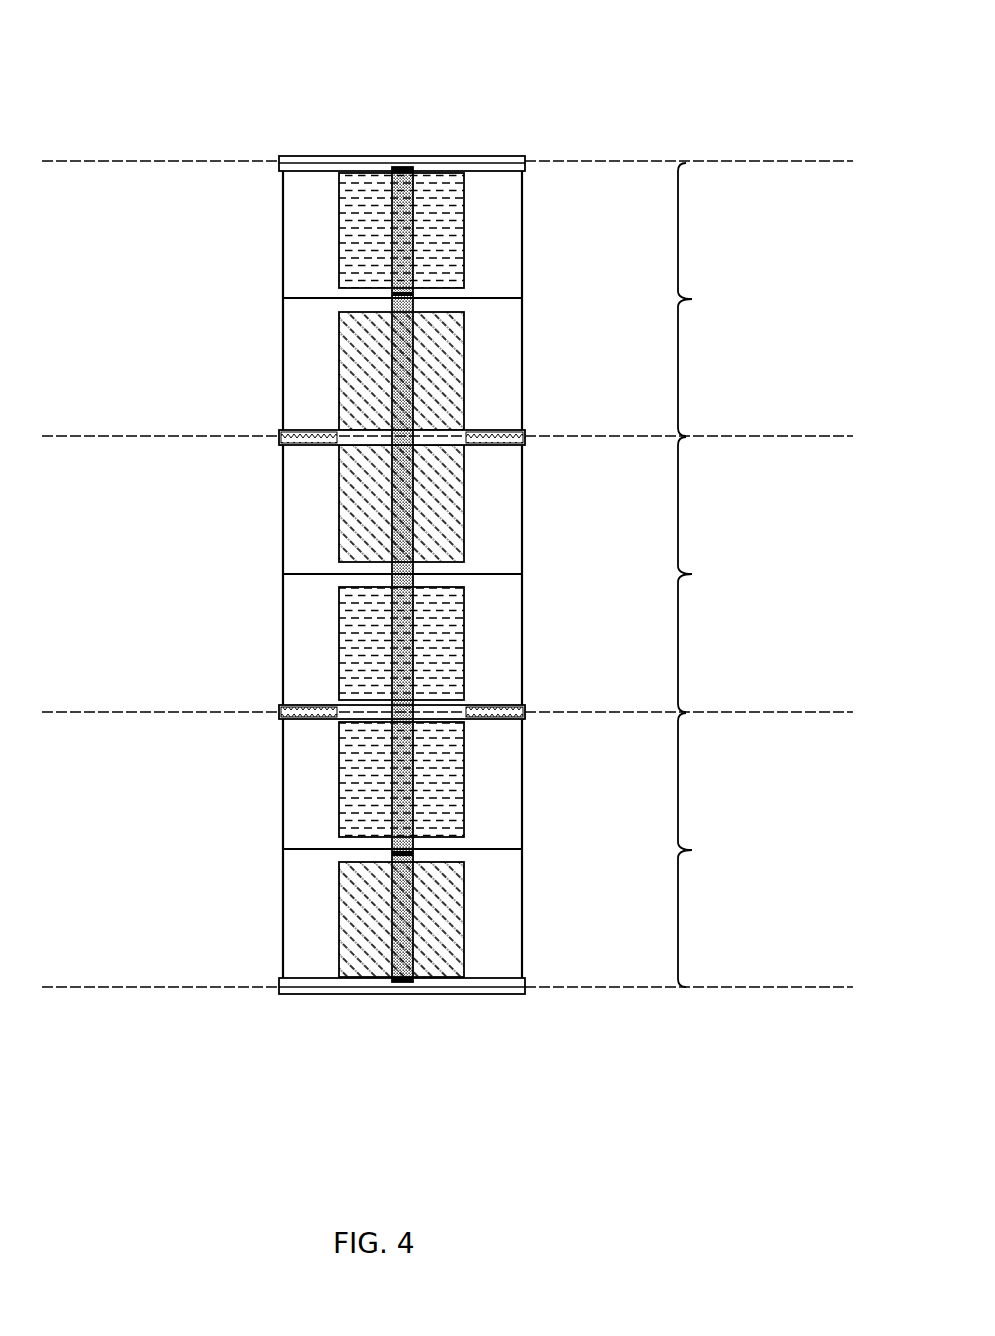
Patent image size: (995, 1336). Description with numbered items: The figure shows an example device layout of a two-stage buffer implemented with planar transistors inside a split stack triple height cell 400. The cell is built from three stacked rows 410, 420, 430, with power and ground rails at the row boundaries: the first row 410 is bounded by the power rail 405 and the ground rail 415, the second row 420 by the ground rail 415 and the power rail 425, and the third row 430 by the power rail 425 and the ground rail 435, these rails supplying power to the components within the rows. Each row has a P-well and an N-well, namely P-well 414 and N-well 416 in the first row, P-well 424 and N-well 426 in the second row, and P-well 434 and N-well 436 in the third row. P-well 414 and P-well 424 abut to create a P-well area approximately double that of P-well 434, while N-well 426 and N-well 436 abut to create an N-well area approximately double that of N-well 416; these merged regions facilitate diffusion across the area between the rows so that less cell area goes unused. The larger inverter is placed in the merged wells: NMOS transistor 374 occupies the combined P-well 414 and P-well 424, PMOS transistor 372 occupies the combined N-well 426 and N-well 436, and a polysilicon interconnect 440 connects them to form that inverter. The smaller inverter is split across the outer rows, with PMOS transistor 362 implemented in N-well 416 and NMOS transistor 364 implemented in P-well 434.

The split stack triple height cell 400 is at (688, 112).
The power rail 405 is at (315, 153).
The first row 410 is at (715, 299).
The P-well 414 is at (315, 345).
The ground rail 415 is at (492, 445).
The N-well 416 is at (315, 234).
The second row 420 is at (715, 574).
The P-well 424 is at (315, 543).
The power rail 425 is at (315, 704).
The N-well 426 is at (492, 624).
The third row 430 is at (716, 850).
The P-well 434 is at (492, 876).
The ground rail 435 is at (315, 978).
The N-well 436 is at (315, 768).
The polysilicon interconnect 440 is at (390, 641).
The PMOS transistor 362 is at (440, 227).
The NMOS transistor 364 is at (440, 916).
The PMOS transistor 372 is at (440, 662).
The NMOS transistor 374 is at (440, 375).